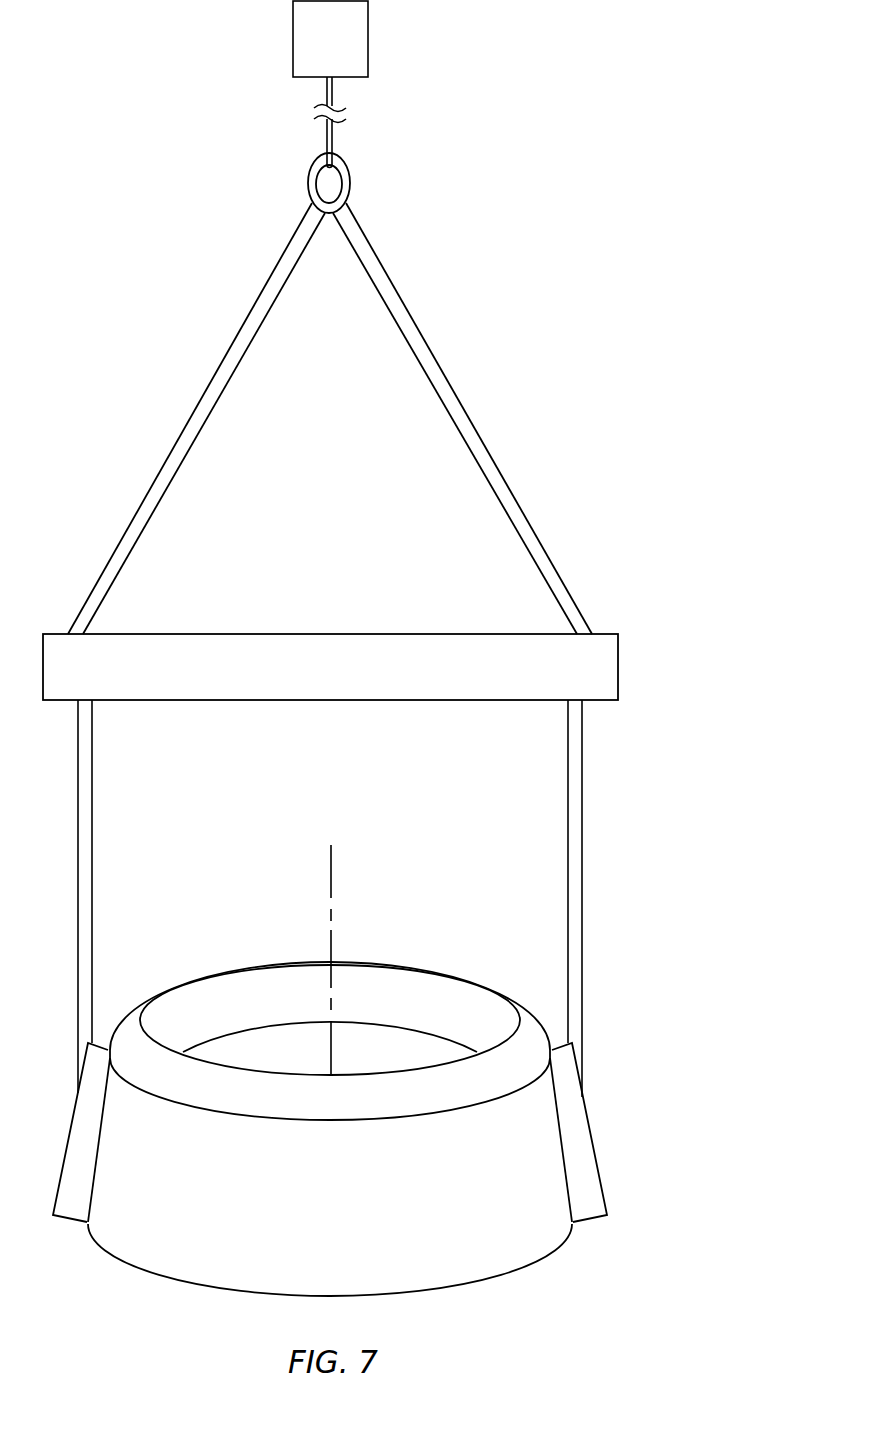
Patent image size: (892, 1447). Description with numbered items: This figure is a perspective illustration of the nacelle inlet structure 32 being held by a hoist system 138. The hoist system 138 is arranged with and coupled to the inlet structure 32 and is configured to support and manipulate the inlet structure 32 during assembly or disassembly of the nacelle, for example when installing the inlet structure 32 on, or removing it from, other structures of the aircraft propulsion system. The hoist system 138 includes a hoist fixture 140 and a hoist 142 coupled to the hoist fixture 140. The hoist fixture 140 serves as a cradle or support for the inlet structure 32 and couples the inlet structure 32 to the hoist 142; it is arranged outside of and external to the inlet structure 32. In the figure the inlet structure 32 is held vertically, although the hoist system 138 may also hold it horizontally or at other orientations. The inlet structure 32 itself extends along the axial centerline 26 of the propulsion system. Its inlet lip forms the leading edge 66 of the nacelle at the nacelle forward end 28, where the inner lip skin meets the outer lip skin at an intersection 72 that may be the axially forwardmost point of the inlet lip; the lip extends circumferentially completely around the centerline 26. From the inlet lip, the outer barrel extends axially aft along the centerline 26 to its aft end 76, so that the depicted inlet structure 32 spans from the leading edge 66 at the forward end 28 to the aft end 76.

The hoist 142 is at (311, 53).
The hoist system 138 is at (330, 355).
The hoist fixture 140 is at (640, 661).
The axial centerline 26 is at (331, 860).
The forward end 28 is at (330, 996).
The leading edge 66 is at (330, 996).
The intersection 72 is at (229, 962).
The nacelle inlet structure 32 is at (330, 1098).
The aft end 76 is at (192, 1284).